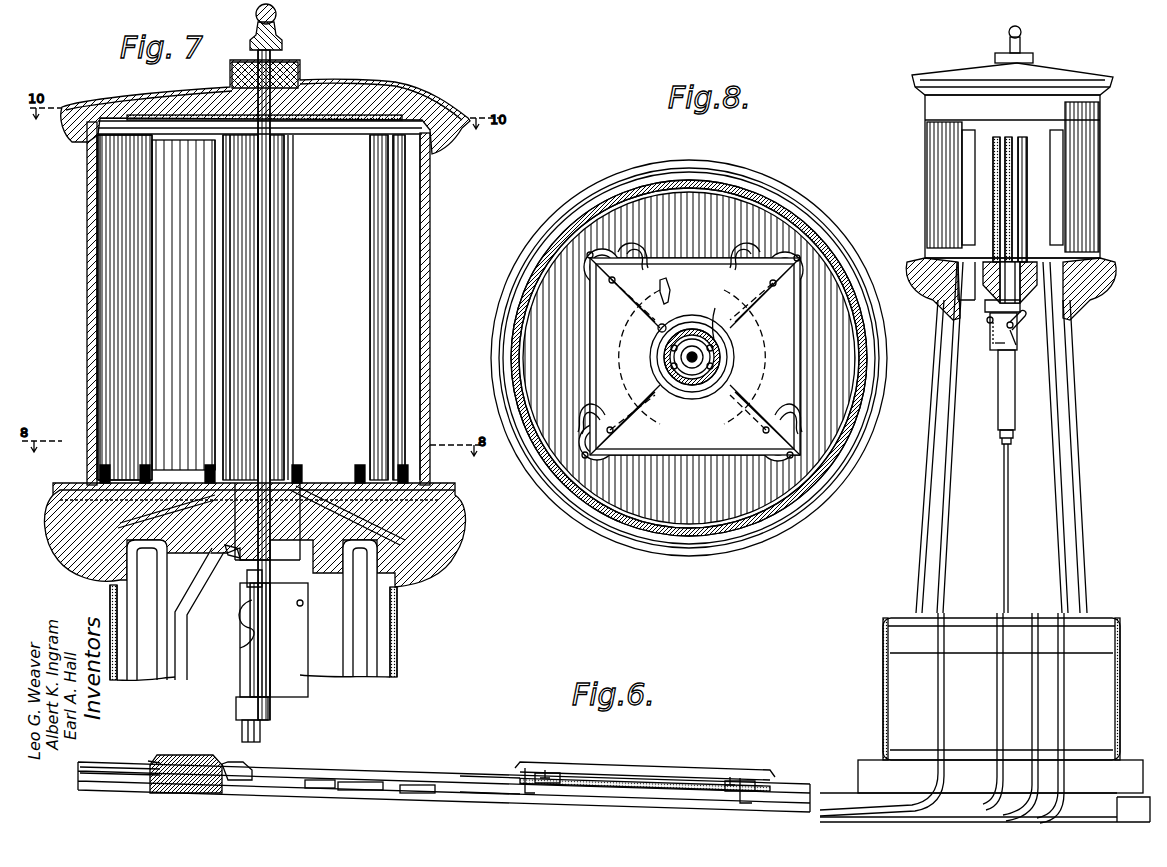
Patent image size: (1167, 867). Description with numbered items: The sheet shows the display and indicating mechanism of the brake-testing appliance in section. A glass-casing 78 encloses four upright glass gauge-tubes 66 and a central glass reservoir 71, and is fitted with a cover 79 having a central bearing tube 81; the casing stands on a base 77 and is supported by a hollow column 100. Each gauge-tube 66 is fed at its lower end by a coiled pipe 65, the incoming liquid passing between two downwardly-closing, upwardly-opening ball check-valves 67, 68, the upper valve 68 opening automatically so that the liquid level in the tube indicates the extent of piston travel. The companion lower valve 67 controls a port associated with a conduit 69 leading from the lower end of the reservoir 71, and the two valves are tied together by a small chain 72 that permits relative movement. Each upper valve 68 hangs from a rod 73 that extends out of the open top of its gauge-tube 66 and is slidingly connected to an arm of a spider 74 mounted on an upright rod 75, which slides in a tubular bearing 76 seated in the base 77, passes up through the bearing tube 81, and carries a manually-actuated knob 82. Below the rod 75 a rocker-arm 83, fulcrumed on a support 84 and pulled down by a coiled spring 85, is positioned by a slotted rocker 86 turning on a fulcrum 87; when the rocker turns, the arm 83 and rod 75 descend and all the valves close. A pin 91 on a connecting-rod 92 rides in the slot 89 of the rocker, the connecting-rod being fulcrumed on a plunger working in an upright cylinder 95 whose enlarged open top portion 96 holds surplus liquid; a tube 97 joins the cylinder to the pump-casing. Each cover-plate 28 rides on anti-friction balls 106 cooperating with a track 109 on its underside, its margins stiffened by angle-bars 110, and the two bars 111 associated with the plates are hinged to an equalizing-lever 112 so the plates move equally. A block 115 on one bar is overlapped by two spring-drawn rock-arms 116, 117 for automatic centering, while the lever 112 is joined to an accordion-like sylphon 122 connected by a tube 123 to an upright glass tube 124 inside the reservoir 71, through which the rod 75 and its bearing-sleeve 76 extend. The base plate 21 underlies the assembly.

In FIG. 6, the base plate 21 is at (800, 785).
In FIG. 6, the cover-plate 28 is at (634, 763).
In FIG. 7, the coiled pipe 65 is at (165, 645).
In FIG. 8, the coiled pipe 65 is at (650, 266).
In FIG. 6, the coiled pipe 65 is at (1060, 558).
In FIG. 7, the gauge-tube 66 is at (115, 190).
In FIG. 8, the gauge-tube 66 is at (798, 282).
In FIG. 6, the gauge-tube 66 is at (960, 162).
In FIG. 7, the ball check-valve 67 is at (118, 546).
In FIG. 7, the ball check-valve 68 is at (110, 522).
In FIG. 7, the conduit 69 is at (335, 483).
In FIG. 8, the conduit 69 is at (760, 352).
In FIG. 7, the central glass reservoir 71 is at (290, 302).
In FIG. 8, the central glass reservoir 71 is at (703, 385).
In FIG. 6, the central glass reservoir 71 is at (1030, 212).
In FIG. 7, the chain 72 is at (108, 535).
In FIG. 7, the rod 73 is at (122, 212).
In FIG. 8, the rod 73 is at (585, 270).
In FIG. 7, the spider 74 is at (334, 114).
In FIG. 7, the upright rod 75 is at (272, 200).
In FIG. 8, the upright rod 75 is at (694, 338).
In FIG. 7, the tubular bearing 76 is at (268, 224).
In FIG. 8, the tubular bearing 76 is at (683, 390).
In FIG. 6, the tubular bearing 76 is at (1017, 160).
In FIG. 7, the base 77 is at (318, 490).
In FIG. 8, the base 77 is at (690, 400).
In FIG. 6, the base 77 is at (1032, 255).
In FIG. 7, the glass-casing 78 is at (430, 234).
In FIG. 8, the glass-casing 78 is at (823, 258).
In FIG. 6, the glass-casing 78 is at (1098, 148).
In FIG. 7, the cover 79 is at (378, 100).
In FIG. 6, the cover 79 is at (1083, 82).
In FIG. 7, the bearing tube 81 is at (270, 68).
In FIG. 7, the knob 82 is at (277, 13).
In FIG. 6, the knob 82 is at (1022, 31).
In FIG. 6, the rocker-arm 83 is at (980, 318).
In FIG. 6, the support 84 is at (965, 312).
In FIG. 6, the coiled spring 85 is at (987, 324).
In FIG. 7, the slotted rocker 86 is at (242, 645).
In FIG. 6, the slotted rocker 86 is at (1018, 340).
In FIG. 6, the fulcrum 87 is at (1015, 328).
In FIG. 7, the slot 89 is at (240, 620).
In FIG. 6, the slot 89 is at (1022, 318).
In FIG. 6, the pin 91 is at (992, 338).
In FIG. 6, the connecting-rod 92 is at (997, 347).
In FIG. 7, the cylinder 95 is at (262, 733).
In FIG. 6, the cylinder 95 is at (1000, 415).
In FIG. 7, the enlarged top end portion 96 is at (236, 694).
In FIG. 6, the enlarged top end portion 96 is at (1002, 370).
In FIG. 6, the tube 97 is at (1003, 540).
In FIG. 7, the hollow column 100 is at (400, 652).
In FIG. 8, the hollow column 100 is at (708, 456).
In FIG. 6, the hollow column 100 is at (925, 523).
In FIG. 6, the anti-friction balls 106 is at (562, 779).
In FIG. 6, the track 109 is at (548, 768).
In FIG. 6, the angle-bars 110 is at (530, 770).
In FIG. 6, the bar 111 is at (478, 776).
In FIG. 6, the equalizing-lever 112 is at (252, 759).
In FIG. 6, the block 115 is at (372, 782).
In FIG. 6, the rock-arm 116 is at (322, 779).
In FIG. 6, the rock-arm 117 is at (422, 785).
In FIG. 6, the sylphon 122 is at (190, 758).
In FIG. 7, the tube 123 is at (198, 586).
In FIG. 8, the tube 123 is at (671, 288).
In FIG. 6, the tube 123 is at (140, 764).
In FIG. 7, the glass tube 124 is at (274, 284).
In FIG. 8, the glass tube 124 is at (715, 308).
In FIG. 6, the glass tube 124 is at (1017, 198).